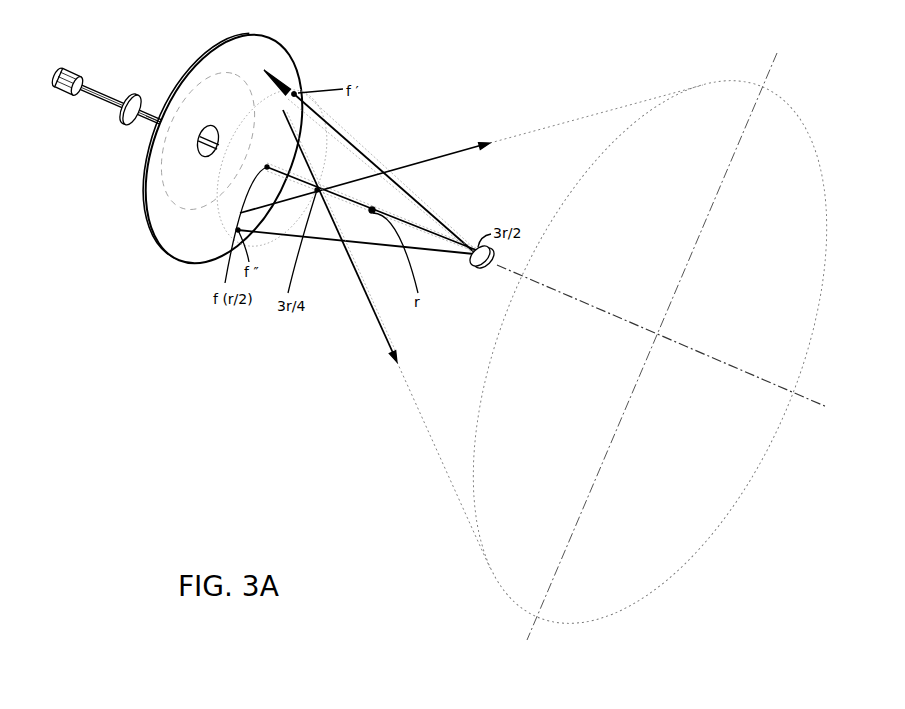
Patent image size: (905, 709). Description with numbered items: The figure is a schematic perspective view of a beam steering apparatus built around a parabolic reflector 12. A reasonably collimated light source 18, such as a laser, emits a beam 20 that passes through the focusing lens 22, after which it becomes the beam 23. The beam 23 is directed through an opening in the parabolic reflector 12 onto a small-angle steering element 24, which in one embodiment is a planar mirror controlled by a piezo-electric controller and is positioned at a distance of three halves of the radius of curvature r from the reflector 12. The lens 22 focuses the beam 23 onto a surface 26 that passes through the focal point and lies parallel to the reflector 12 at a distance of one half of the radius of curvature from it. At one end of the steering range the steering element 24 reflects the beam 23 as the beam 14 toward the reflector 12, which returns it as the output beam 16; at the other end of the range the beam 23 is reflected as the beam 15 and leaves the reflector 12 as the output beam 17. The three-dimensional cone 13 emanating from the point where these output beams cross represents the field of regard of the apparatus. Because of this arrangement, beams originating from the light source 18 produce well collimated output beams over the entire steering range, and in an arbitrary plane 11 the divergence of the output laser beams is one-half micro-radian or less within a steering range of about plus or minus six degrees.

The arbitrary plane 11 is at (768, 72).
The parabolic reflector 12 is at (232, 42).
The three-dimensional cone 13 is at (428, 433).
The beam 14 is at (430, 210).
The beam 15 is at (397, 249).
The beam 16 is at (380, 330).
The beam 17 is at (443, 156).
The light source 18 is at (57, 89).
The beam 20 is at (107, 103).
The focusing lens 22 is at (130, 127).
The beam 23 is at (148, 123).
The steering element 24 is at (483, 268).
The surface 26 is at (300, 90).